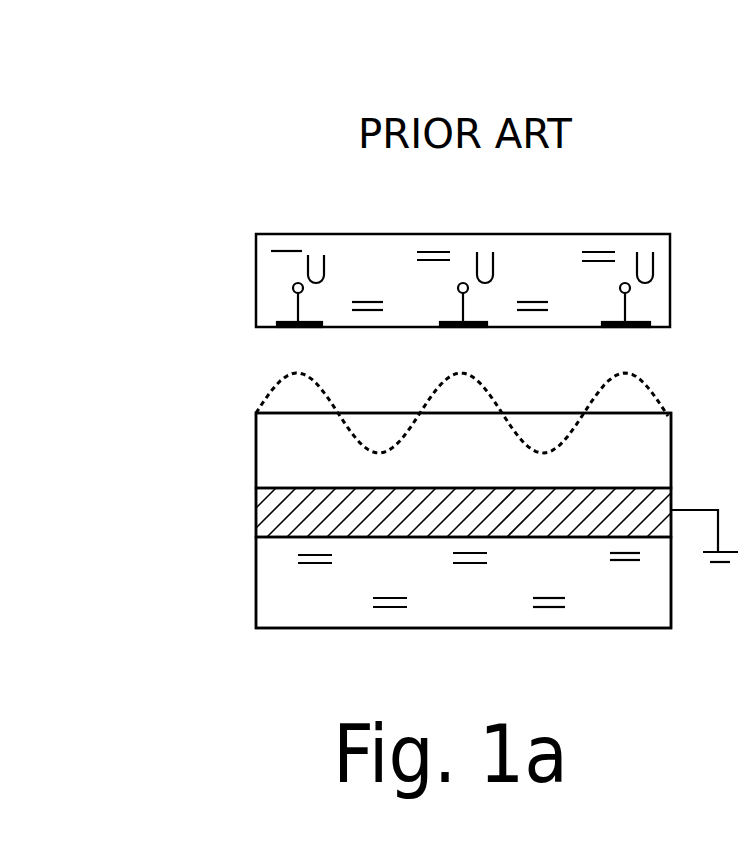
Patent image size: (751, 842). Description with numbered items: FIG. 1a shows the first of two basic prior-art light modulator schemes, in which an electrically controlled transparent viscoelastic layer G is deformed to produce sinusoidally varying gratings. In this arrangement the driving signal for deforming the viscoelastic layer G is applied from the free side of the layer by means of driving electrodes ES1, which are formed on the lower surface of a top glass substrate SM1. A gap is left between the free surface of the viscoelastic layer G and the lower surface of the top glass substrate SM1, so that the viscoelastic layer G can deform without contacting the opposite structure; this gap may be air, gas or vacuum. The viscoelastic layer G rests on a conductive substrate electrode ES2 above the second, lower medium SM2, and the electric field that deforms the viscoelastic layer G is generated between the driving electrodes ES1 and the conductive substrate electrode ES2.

The top glass substrate SM1 is at (302, 259).
The driving electrodes ES1 is at (277, 324).
The viscoelastic layer G is at (282, 451).
The conductive substrate electrode ES2 is at (282, 513).
The second medium (lower medium) SM2 is at (278, 596).